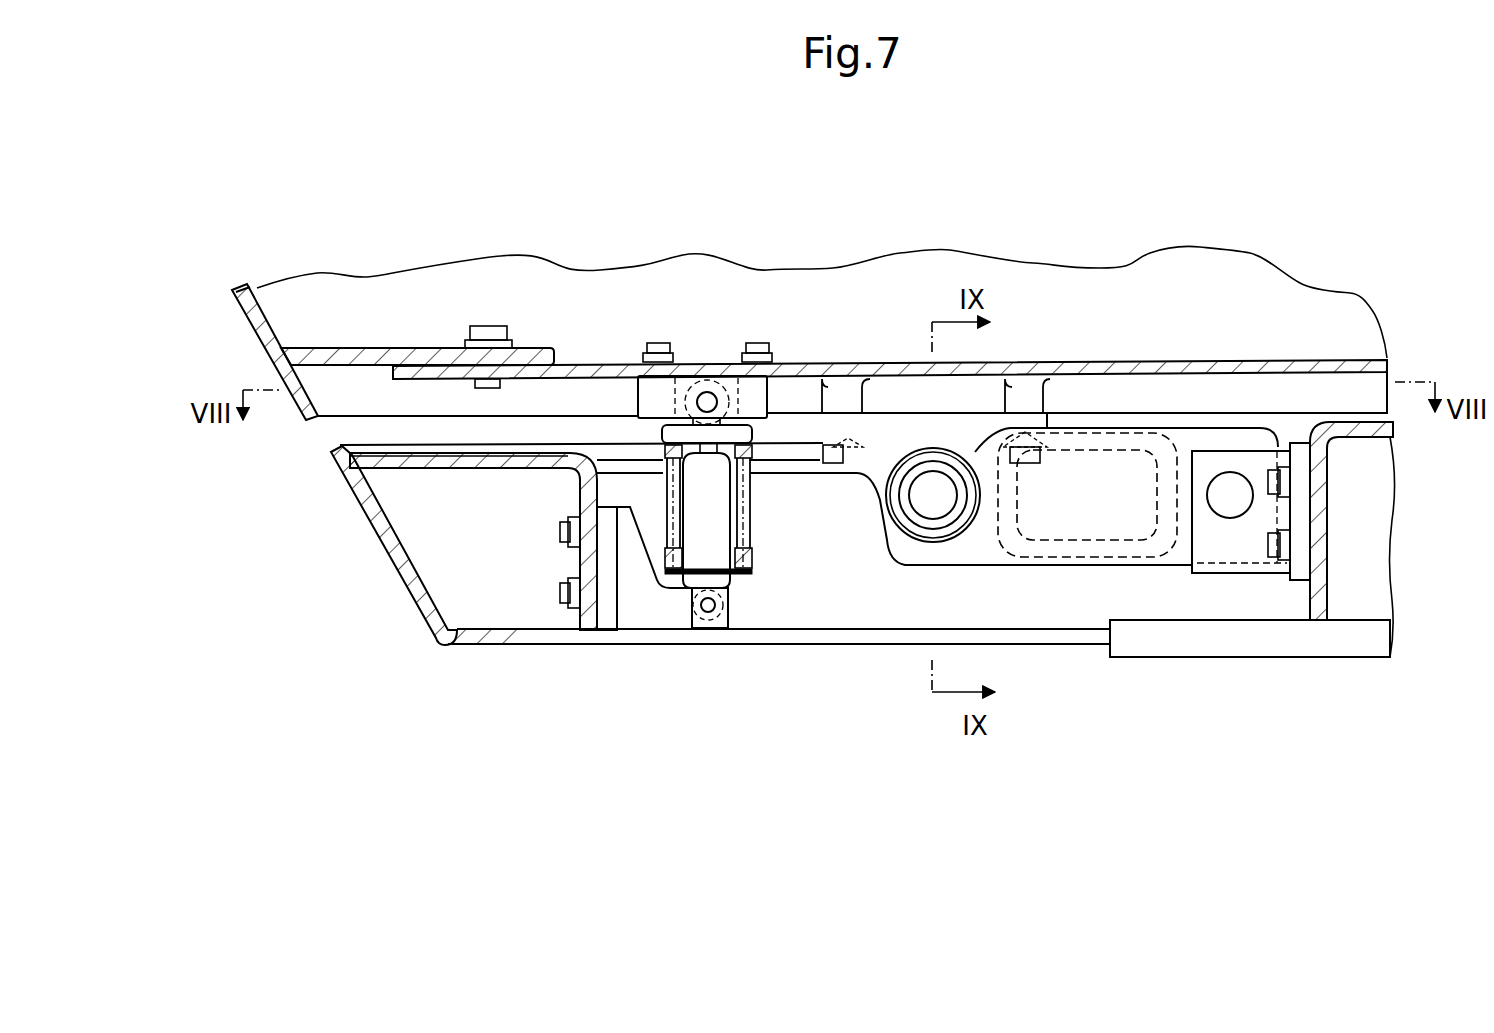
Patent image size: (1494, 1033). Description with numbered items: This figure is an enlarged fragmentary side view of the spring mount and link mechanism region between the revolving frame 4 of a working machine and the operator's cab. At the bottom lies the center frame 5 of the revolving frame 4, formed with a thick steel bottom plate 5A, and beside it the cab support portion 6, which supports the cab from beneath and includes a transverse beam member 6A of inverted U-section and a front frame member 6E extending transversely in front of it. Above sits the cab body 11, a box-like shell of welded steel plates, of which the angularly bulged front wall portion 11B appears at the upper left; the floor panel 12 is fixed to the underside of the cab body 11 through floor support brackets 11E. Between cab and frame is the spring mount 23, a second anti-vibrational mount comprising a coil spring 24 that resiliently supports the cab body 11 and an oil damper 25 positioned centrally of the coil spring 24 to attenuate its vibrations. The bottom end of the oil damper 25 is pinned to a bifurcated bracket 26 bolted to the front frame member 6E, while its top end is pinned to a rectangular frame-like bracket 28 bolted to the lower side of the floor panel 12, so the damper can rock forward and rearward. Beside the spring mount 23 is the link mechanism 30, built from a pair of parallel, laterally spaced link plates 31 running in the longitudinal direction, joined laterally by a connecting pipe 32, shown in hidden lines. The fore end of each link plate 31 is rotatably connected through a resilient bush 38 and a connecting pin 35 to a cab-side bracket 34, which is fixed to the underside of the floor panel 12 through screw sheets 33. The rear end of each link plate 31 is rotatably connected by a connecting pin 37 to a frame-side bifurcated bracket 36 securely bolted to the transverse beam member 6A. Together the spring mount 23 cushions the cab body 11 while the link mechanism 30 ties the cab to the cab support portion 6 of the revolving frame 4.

The revolving frame 4 is at (540, 652).
The center frame 5 is at (1358, 664).
The bottom plate 5A is at (1247, 653).
The cab support portion 6 is at (450, 652).
The transverse beam member 6A is at (1330, 455).
The front frame member 6E is at (433, 463).
The cab body 11 is at (232, 314).
The front wall portion 11B is at (260, 310).
The floor support brackets 11E is at (376, 360).
The floor panel 12 is at (582, 366).
The spring mount 23 is at (762, 433).
The coil spring 24 is at (752, 560).
The oil damper 25 is at (700, 553).
The bifurcated bracket 26 is at (636, 612).
The rectangular frame-like bracket 28 is at (640, 393).
The link mechanism 30 is at (1155, 568).
The link plates 31 is at (1183, 432).
The connecting pipe 32 is at (1103, 440).
The screw sheets 33 is at (843, 390).
The brackets 34 is at (970, 540).
The connecting pin 35 is at (932, 502).
The bifurcated brackets 36 is at (1297, 518).
The connecting pin 37 is at (1232, 490).
The resilient bushes 38 is at (913, 450).